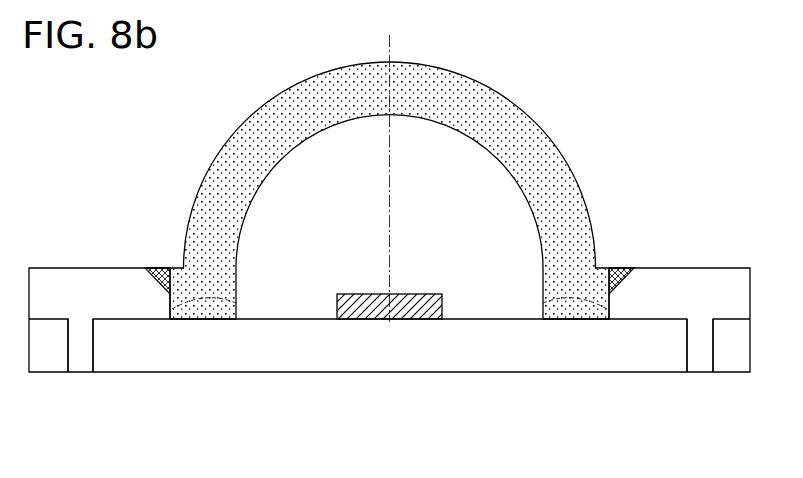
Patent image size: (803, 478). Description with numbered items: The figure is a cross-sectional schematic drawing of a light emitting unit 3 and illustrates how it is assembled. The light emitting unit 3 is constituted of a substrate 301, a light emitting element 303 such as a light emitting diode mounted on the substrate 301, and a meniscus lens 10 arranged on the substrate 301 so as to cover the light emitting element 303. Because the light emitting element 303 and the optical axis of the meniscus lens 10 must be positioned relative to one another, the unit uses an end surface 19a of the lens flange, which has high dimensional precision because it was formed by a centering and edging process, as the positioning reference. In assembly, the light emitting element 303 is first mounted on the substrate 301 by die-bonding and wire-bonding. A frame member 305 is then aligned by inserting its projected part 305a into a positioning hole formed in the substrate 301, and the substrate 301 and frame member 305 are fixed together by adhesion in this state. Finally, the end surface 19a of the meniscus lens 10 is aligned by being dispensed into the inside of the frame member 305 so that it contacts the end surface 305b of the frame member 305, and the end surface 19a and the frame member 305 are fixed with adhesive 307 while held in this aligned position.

The light emitting unit 3 is at (657, 137).
The meniscus lens 10 is at (520, 140).
The end surface 19a is at (236, 303).
The substrate 301 is at (493, 372).
The light emitting element 303 is at (386, 320).
The frame member 305 is at (130, 313).
The projected part 305a is at (78, 350).
The end surface 305b is at (168, 307).
The adhesive 307 is at (166, 267).